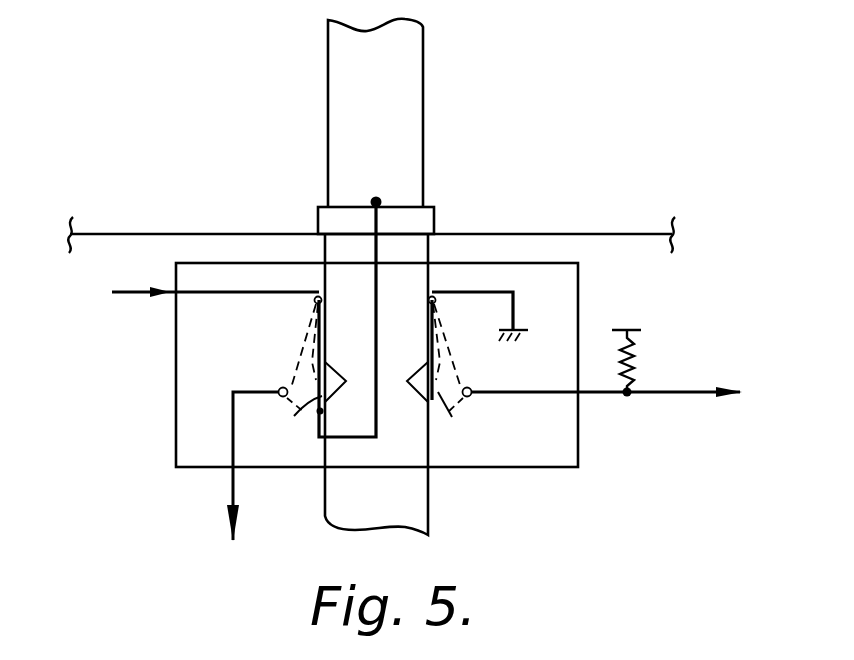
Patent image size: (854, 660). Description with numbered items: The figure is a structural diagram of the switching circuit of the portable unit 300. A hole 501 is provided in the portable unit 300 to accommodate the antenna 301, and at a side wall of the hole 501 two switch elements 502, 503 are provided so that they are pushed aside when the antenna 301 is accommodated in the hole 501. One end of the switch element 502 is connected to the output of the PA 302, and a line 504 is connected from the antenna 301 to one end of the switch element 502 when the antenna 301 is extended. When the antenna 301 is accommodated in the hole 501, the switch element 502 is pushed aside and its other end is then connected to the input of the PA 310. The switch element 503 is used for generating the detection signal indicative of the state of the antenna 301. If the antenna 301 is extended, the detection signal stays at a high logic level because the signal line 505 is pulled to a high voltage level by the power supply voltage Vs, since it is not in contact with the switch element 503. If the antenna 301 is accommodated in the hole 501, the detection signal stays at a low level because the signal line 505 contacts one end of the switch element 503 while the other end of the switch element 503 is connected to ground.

The portable unit 300 is at (583, 234).
The antenna 301 is at (423, 67).
The PA 302 is at (174, 291).
The PA 310 is at (233, 482).
The hole 501 is at (410, 507).
The switch element 502 is at (307, 374).
The switch element 503 is at (467, 371).
The line 504 is at (378, 287).
The signal line 505 is at (515, 390).